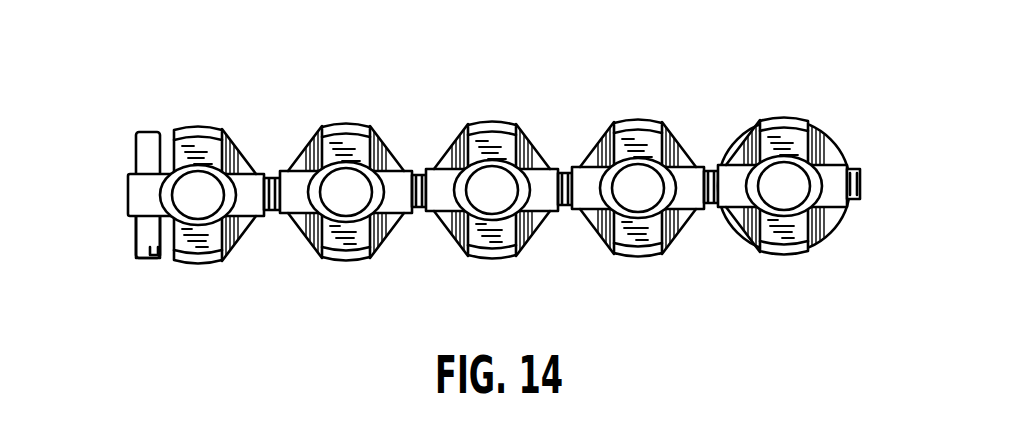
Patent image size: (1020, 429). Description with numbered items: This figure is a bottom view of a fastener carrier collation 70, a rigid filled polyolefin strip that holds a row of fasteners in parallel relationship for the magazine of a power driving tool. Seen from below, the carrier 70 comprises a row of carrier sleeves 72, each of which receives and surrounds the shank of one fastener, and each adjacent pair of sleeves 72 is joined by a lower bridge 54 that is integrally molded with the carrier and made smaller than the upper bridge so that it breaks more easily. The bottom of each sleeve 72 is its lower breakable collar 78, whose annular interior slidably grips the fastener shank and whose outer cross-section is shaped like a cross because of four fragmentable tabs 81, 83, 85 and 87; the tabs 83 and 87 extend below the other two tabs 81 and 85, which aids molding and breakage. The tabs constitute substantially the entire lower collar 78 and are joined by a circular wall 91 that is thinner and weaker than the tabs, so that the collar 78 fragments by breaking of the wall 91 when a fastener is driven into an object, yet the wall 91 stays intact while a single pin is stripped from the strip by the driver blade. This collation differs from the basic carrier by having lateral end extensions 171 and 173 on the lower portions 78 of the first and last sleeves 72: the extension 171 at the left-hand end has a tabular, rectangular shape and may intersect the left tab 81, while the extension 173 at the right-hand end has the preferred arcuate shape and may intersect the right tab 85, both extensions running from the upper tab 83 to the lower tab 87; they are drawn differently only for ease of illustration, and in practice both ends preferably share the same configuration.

The lower bridge 54 is at (267, 214).
The carrier 70 is at (127, 265).
The carrier sleeve 72 is at (156, 153).
The lower breakable collar 78 is at (116, 152).
The left fragmentable tab 81 is at (732, 127).
The upper fragmentable tab 83 is at (802, 142).
The right fragmentable tab 85 is at (892, 168).
The lower fragmentable tab 87 is at (815, 272).
The circular wall 91 is at (640, 126).
The lateral end extension 171 is at (161, 321).
The lateral end extension 173 is at (822, 157).